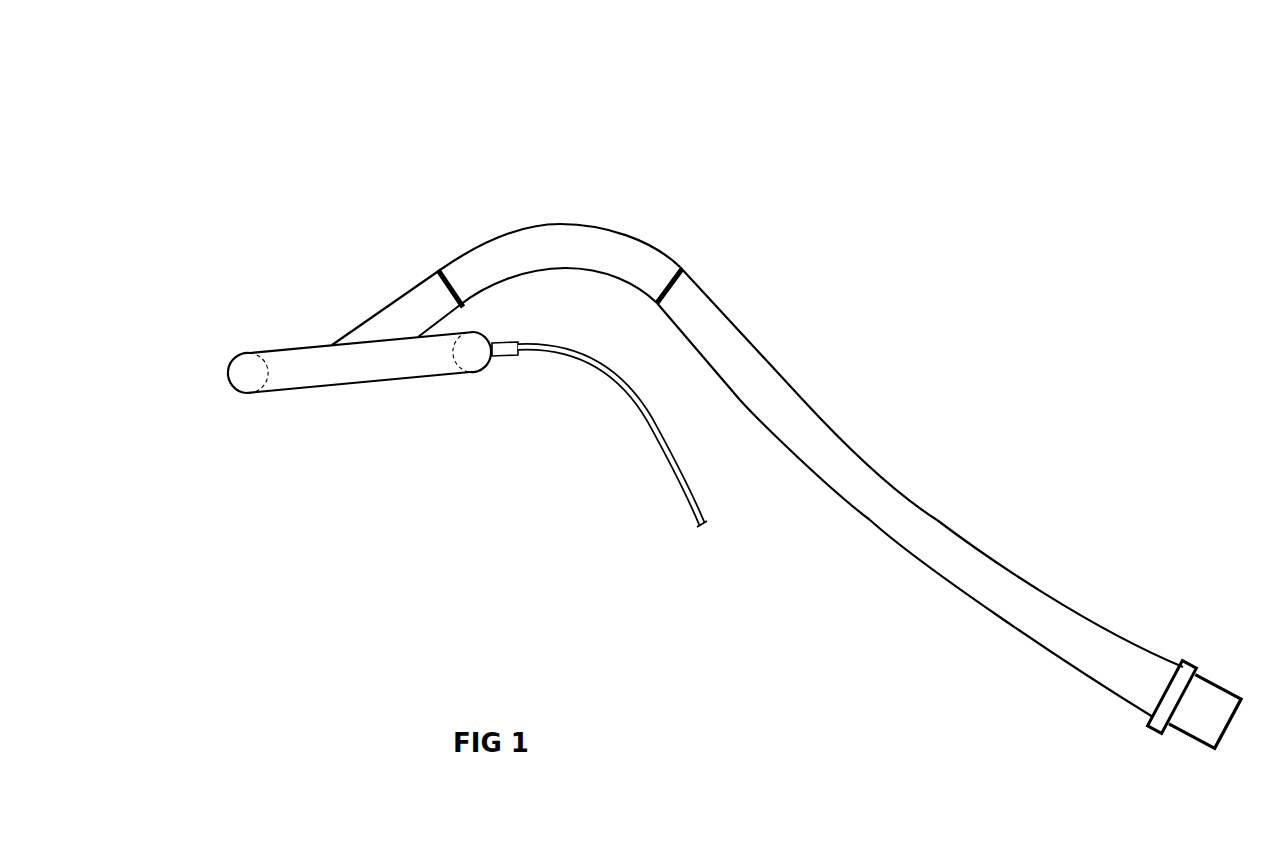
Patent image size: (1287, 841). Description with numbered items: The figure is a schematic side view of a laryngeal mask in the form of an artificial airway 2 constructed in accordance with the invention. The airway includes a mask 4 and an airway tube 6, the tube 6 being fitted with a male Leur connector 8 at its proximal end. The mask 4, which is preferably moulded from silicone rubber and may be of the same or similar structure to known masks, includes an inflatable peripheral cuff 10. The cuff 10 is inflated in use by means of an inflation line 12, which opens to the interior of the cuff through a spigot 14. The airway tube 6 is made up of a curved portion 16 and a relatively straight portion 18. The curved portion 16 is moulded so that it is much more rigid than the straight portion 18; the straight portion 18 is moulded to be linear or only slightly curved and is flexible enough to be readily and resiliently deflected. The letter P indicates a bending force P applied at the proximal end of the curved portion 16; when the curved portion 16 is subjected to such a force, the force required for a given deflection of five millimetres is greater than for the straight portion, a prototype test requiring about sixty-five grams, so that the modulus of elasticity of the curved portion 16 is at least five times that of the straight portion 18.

The artificial airway 2 is at (978, 357).
The mask 4 is at (335, 329).
The airway tube 6 is at (818, 405).
The male Leur connector 8 is at (1216, 686).
The inflatable peripheral cuff 10 is at (247, 372).
The inflation line 12 is at (668, 463).
The spigot 14 is at (507, 356).
The curved portion 16 is at (615, 228).
The straight portion 18 is at (960, 535).
The force P is at (690, 263).